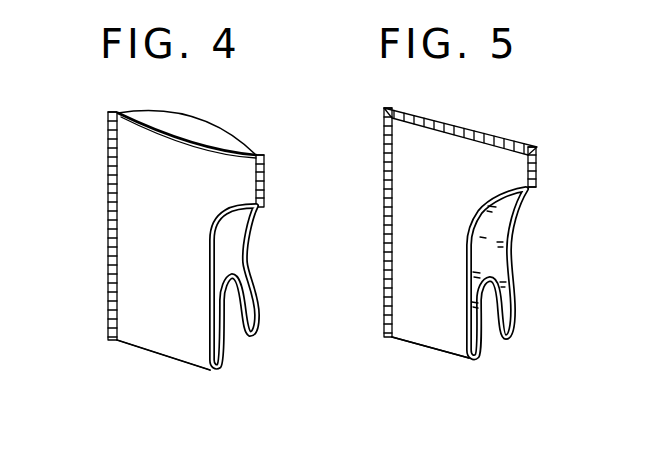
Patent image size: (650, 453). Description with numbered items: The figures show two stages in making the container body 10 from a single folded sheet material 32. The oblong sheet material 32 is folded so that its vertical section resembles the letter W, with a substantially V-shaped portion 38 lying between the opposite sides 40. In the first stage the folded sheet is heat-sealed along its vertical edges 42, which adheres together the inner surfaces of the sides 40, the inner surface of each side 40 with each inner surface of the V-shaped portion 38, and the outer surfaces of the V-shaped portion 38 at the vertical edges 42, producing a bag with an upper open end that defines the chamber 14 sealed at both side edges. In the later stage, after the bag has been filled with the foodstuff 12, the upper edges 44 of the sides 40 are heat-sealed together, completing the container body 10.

In FIG. 5, the container body 10 is at (431, 350).
In FIG. 5, the foodstuff 12 is at (493, 258).
In FIG. 4, the chamber 14 is at (233, 318).
In FIG. 5, the chamber 14 is at (491, 330).
In FIG. 4, the sheet material 32 is at (163, 327).
In FIG. 5, the sheet material 32 is at (413, 327).
In FIG. 4, the V-shaped portion 38 is at (242, 303).
In FIG. 5, the V-shaped portion 38 is at (495, 307).
In FIG. 4, the sides 40 is at (152, 190).
In FIG. 5, the sides 40 is at (418, 198).
In FIG. 4, the vertical edges 42 is at (108, 236).
In FIG. 5, the vertical edges 42 is at (383, 145).
In FIG. 5, the upper edges 44 is at (460, 132).